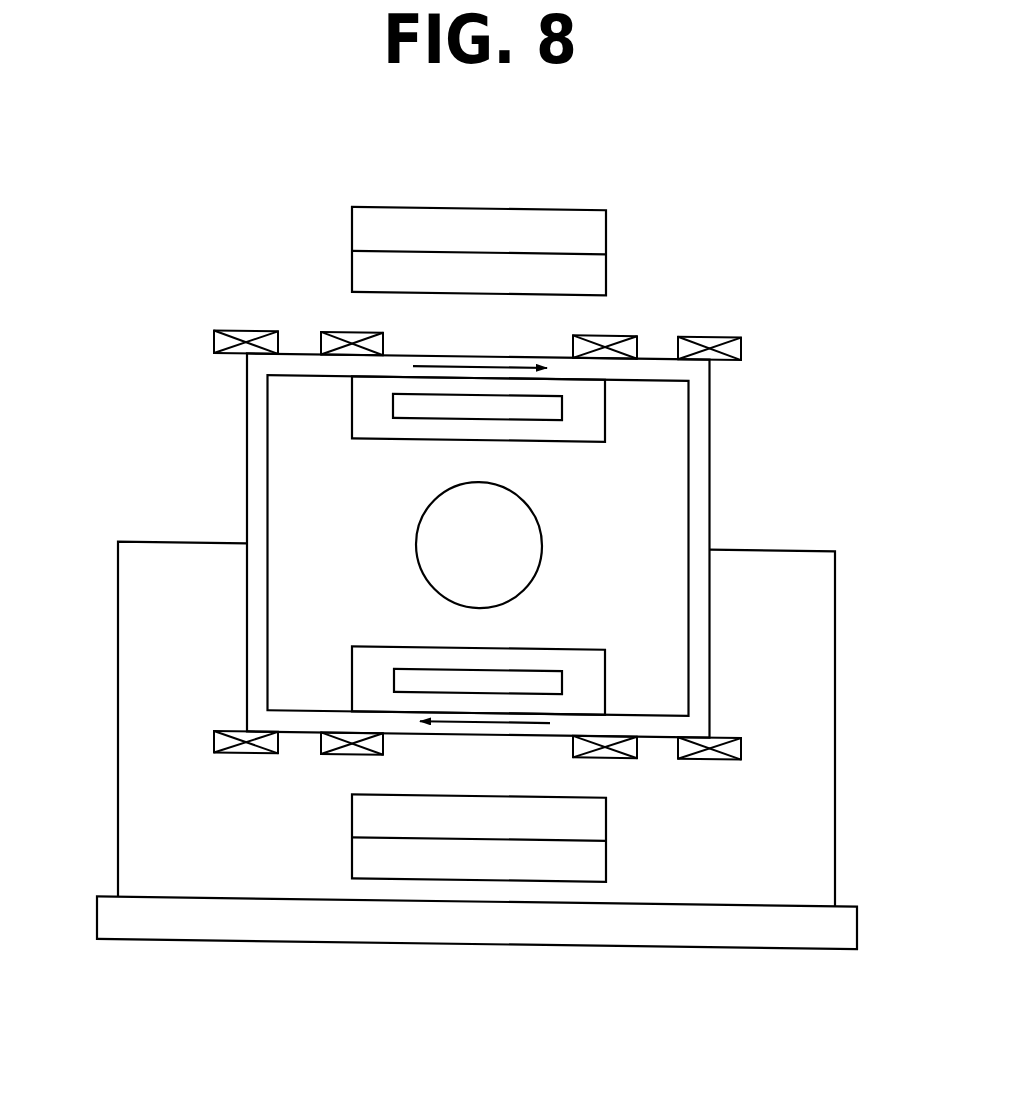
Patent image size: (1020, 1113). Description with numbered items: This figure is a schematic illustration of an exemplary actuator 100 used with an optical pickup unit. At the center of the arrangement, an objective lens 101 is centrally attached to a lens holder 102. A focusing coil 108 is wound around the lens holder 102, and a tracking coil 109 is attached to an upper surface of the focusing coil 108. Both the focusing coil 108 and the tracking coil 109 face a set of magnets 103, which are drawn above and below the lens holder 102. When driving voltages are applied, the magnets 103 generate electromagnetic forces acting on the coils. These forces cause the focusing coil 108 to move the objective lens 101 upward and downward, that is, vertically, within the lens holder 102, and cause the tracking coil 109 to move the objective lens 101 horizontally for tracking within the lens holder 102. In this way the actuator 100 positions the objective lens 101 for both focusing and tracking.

The actuator 100 is at (108, 158).
The objective lens 101 is at (416, 530).
The lens holder 102 is at (647, 465).
The magnets 103 is at (352, 267).
The focusing coil 108 is at (707, 633).
The tracking coil 109 is at (217, 333).